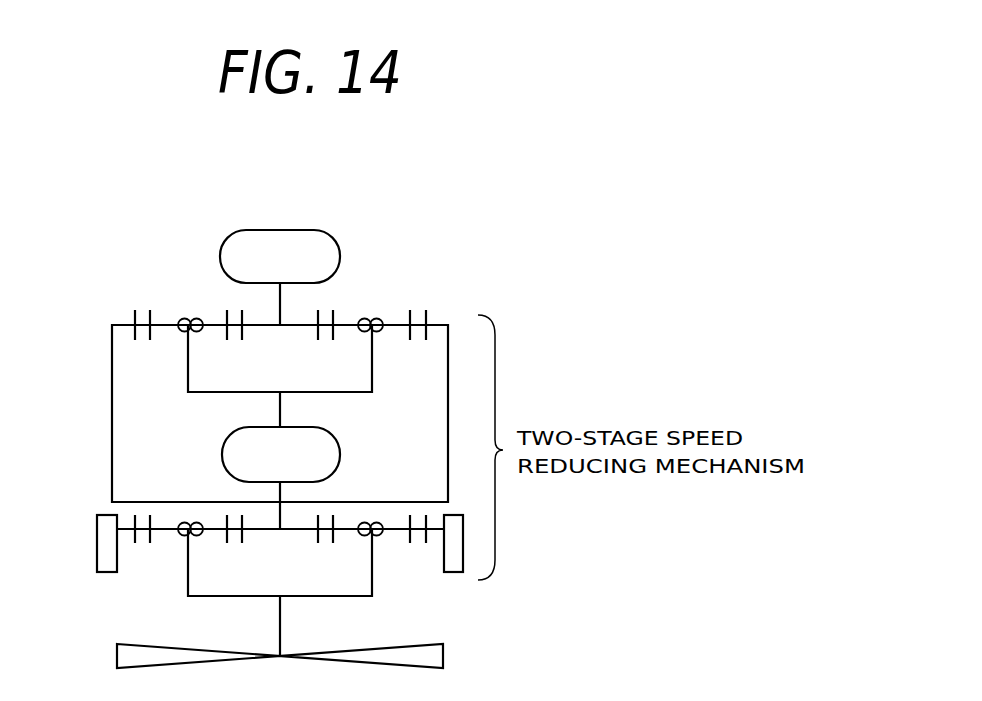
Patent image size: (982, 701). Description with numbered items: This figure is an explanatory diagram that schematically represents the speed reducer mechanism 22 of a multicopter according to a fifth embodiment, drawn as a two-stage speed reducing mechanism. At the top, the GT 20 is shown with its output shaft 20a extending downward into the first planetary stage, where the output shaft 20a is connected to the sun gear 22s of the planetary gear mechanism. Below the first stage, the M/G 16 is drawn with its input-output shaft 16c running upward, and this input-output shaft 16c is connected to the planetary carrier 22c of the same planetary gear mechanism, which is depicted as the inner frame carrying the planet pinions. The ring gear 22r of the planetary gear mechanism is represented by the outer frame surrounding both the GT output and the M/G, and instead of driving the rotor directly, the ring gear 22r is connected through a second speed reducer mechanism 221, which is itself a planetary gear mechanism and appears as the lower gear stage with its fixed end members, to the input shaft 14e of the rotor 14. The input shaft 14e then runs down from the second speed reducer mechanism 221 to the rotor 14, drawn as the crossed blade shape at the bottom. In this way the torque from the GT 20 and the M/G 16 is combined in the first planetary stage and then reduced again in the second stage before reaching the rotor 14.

The GT 20 is at (338, 247).
The output shaft 20a is at (282, 311).
The speed reducer mechanism 22 is at (297, 448).
The ring gear 22r is at (128, 322).
The sun gear 22s is at (262, 327).
The planetary carrier 22c is at (340, 393).
The second speed reducer mechanism 221 is at (388, 561).
The M/G 16 is at (340, 448).
The input-output shaft 16c is at (280, 413).
The input shaft 14e is at (283, 622).
The rotor 14 is at (443, 654).